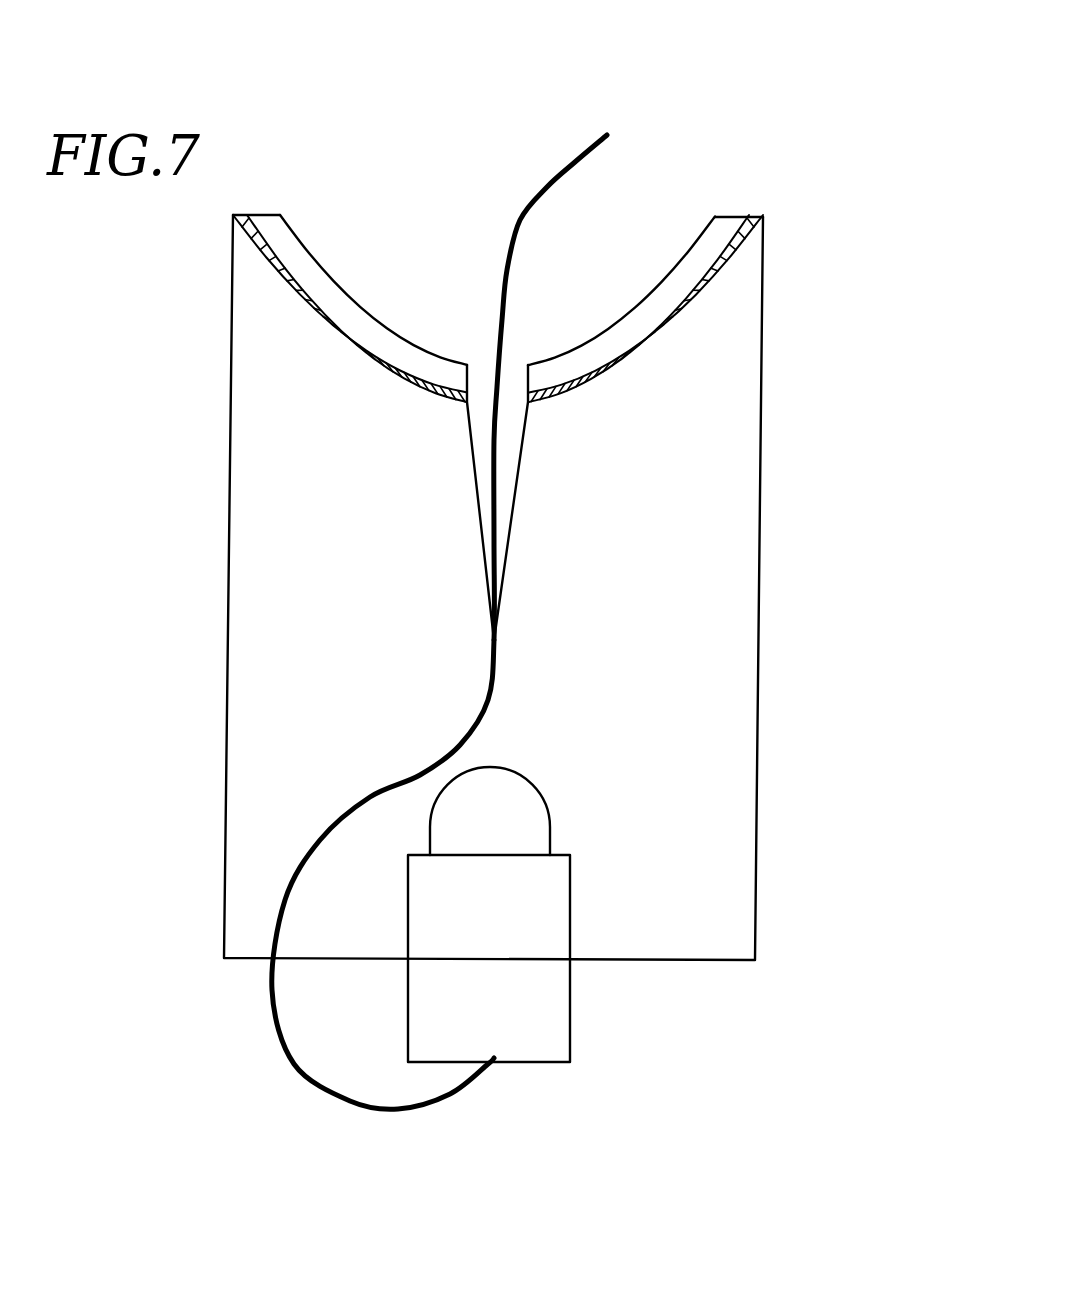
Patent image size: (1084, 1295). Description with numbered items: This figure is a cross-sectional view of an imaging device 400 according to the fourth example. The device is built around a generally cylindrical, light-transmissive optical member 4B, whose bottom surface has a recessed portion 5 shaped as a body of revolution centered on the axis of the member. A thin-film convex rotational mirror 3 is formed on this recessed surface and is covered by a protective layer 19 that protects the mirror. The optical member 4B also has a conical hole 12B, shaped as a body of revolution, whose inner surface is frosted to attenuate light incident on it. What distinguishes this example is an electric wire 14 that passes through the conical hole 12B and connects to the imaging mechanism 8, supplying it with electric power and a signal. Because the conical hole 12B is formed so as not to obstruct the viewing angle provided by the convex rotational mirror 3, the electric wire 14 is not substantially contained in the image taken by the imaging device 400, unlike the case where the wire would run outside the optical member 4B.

The imaging device 400 is at (727, 137).
The optical member 4B is at (825, 712).
The convex rotational mirror 3 is at (272, 248).
The protective layer 19 is at (367, 307).
The recessed portion 5 is at (287, 288).
The conical hole 12B is at (507, 443).
The electric wire 14 is at (300, 1075).
The imaging mechanism 8 is at (580, 1062).